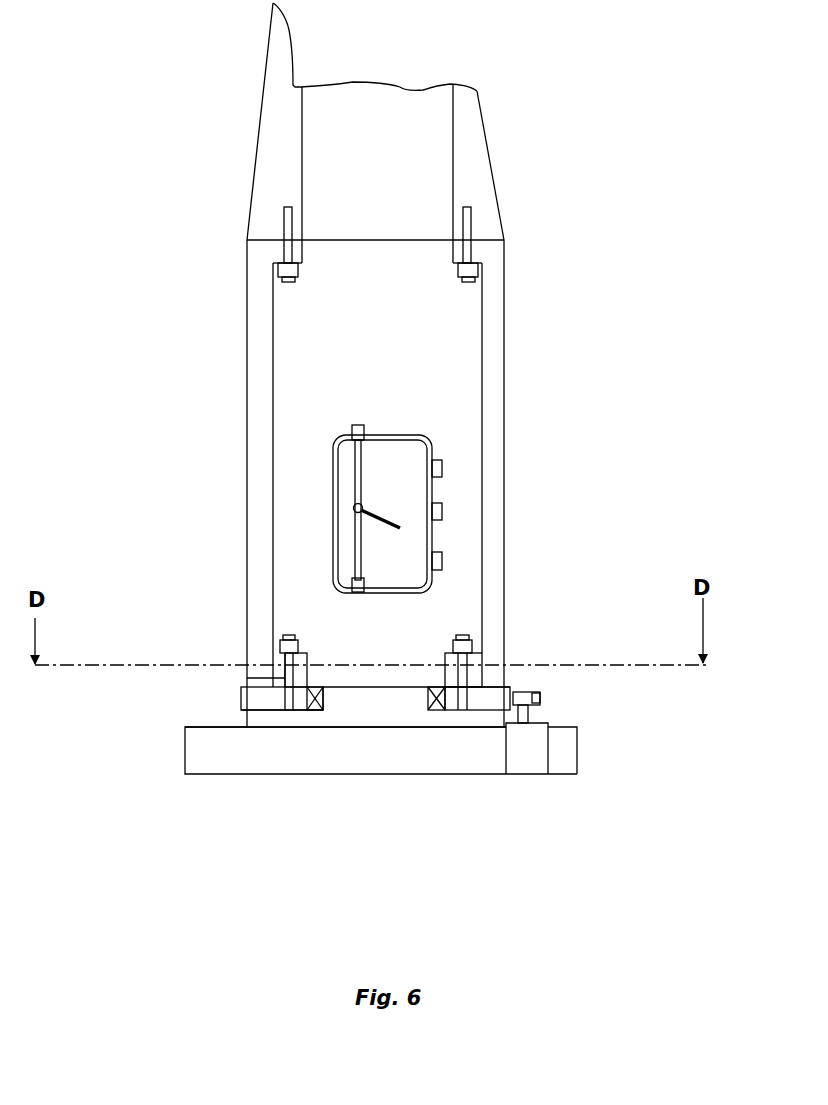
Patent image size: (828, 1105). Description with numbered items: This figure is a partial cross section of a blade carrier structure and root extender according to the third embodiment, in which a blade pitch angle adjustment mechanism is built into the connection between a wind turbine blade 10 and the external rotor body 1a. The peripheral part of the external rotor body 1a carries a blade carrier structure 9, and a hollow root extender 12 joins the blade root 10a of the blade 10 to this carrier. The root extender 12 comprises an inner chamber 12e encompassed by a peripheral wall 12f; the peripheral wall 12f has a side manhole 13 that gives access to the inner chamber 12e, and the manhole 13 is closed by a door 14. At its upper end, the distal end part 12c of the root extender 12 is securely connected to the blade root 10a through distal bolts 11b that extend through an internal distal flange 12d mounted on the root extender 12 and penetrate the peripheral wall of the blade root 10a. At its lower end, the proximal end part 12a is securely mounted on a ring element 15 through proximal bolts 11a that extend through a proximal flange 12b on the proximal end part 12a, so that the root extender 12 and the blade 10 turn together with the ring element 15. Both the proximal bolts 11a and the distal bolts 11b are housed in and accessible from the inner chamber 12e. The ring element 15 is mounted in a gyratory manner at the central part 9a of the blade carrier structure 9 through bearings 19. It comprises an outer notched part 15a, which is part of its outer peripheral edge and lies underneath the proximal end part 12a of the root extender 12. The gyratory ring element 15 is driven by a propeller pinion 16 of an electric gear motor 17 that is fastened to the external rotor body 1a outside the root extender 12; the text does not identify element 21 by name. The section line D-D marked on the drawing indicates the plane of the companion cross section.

The wind turbine blade 10 is at (227, 63).
The blade root 10a is at (480, 173).
The proximal bolts 11a is at (288, 652).
The distal bolts 11b is at (290, 248).
The root extender 12 is at (507, 365).
The proximal end part 12a is at (298, 676).
The proximal flange 12b is at (443, 663).
The distal end part 12c is at (505, 293).
The internal distal flange 12d is at (280, 253).
The inner chamber 12e is at (298, 377).
The peripheral wall 12f is at (495, 427).
The side manhole 13 is at (333, 480).
The door 14 is at (402, 478).
The ring element 15 is at (273, 713).
The outer notched part 15a is at (240, 697).
The propeller pinion 16 is at (528, 697).
The electric gear motor 17 is at (528, 760).
The bearings 19 is at (317, 710).
The external rotor body 1a is at (210, 752).
The side block 21 is at (552, 760).
The blade carrier structure 9 is at (262, 720).
The central part 9a is at (383, 710).